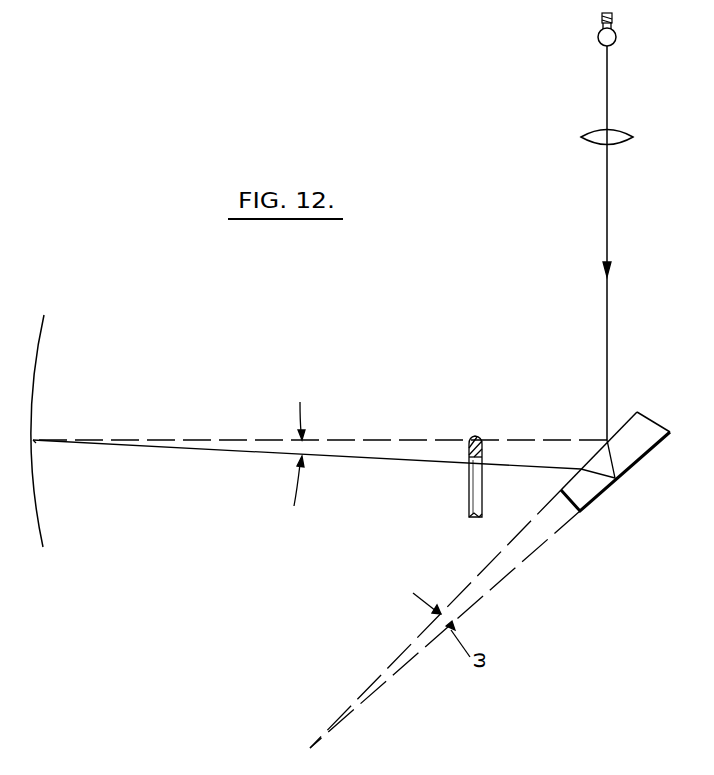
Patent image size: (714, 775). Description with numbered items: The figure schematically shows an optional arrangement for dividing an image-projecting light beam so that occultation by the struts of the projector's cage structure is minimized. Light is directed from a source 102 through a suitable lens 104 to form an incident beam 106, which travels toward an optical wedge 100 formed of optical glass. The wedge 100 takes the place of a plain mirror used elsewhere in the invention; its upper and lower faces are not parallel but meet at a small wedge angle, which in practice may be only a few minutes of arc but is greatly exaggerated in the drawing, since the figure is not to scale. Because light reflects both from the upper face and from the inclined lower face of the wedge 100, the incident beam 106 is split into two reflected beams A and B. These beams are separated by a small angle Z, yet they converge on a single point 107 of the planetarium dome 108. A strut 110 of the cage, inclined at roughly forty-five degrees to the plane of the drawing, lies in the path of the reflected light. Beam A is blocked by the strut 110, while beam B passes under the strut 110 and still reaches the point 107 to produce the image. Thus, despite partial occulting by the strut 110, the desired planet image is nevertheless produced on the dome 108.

The optical wedge 100 is at (642, 424).
The light source 102 is at (598, 34).
The lens 104 is at (591, 131).
The incident beam 106 is at (605, 223).
The point 107 is at (35, 437).
The planetarium dome 108 is at (36, 362).
The strut 110 is at (468, 497).
The reflected beam A is at (546, 438).
The reflected beam B is at (534, 470).
The angle Z is at (298, 442).